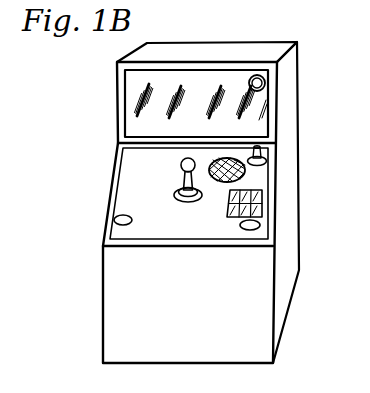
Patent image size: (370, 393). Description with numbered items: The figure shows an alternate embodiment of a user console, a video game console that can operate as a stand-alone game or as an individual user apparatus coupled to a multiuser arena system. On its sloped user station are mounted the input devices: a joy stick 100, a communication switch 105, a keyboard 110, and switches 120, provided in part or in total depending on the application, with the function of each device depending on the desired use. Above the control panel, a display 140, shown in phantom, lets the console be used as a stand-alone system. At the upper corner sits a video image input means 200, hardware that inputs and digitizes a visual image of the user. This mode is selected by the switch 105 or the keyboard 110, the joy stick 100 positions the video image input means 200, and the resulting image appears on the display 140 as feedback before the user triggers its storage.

The joy stick 100 is at (178, 187).
The communication switch 105 is at (263, 152).
The keyboard 110 is at (263, 199).
The switches 120 is at (113, 222).
The display 140 is at (131, 96).
The video image input means 200 is at (266, 82).